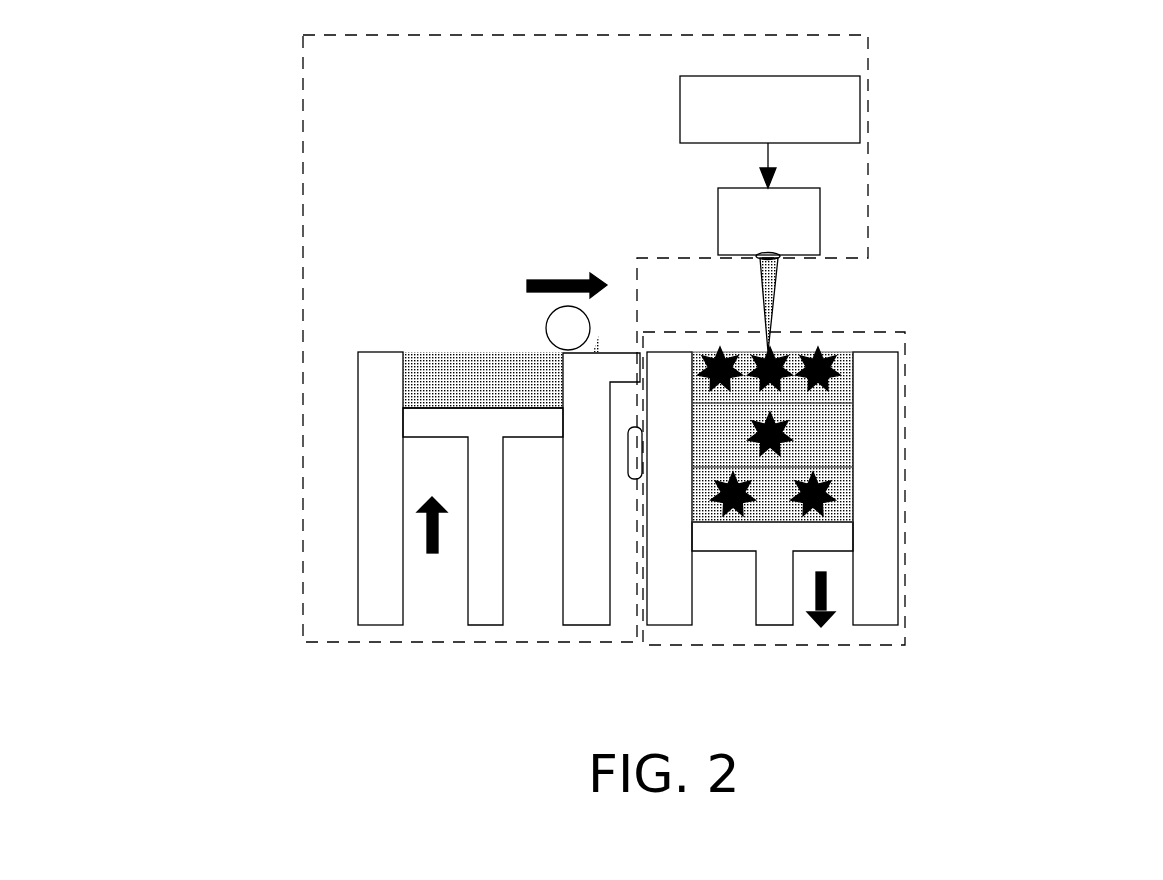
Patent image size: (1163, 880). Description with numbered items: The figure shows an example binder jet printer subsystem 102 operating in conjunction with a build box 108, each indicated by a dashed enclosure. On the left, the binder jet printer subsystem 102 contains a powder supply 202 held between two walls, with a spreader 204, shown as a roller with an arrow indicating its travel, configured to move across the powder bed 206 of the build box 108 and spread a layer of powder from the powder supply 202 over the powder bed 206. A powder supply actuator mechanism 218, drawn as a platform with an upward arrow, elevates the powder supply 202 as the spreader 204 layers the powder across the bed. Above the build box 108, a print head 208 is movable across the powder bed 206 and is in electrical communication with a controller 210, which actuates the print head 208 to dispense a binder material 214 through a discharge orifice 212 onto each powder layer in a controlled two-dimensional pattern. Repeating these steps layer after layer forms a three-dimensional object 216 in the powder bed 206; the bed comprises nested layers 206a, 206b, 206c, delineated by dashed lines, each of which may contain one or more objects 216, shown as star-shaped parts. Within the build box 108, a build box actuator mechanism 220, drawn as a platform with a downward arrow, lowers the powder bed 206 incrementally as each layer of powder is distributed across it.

The binder jet printer subsystem 102 is at (302, 583).
The build box 108 is at (905, 607).
The powder supply 202 is at (458, 352).
The spreader 204 is at (552, 322).
The powder bed 206 is at (919, 400).
The nested layer 206a is at (845, 390).
The nested layer 206b is at (845, 442).
The nested layer 206c is at (845, 508).
The print head 208 is at (720, 217).
The controller 210 is at (690, 113).
The discharge orifice 212 is at (762, 258).
The binder material 214 is at (762, 290).
The three-dimensional object 216 is at (784, 352).
The powder supply actuator mechanism 218 is at (478, 610).
The build box actuator mechanism 220 is at (770, 615).